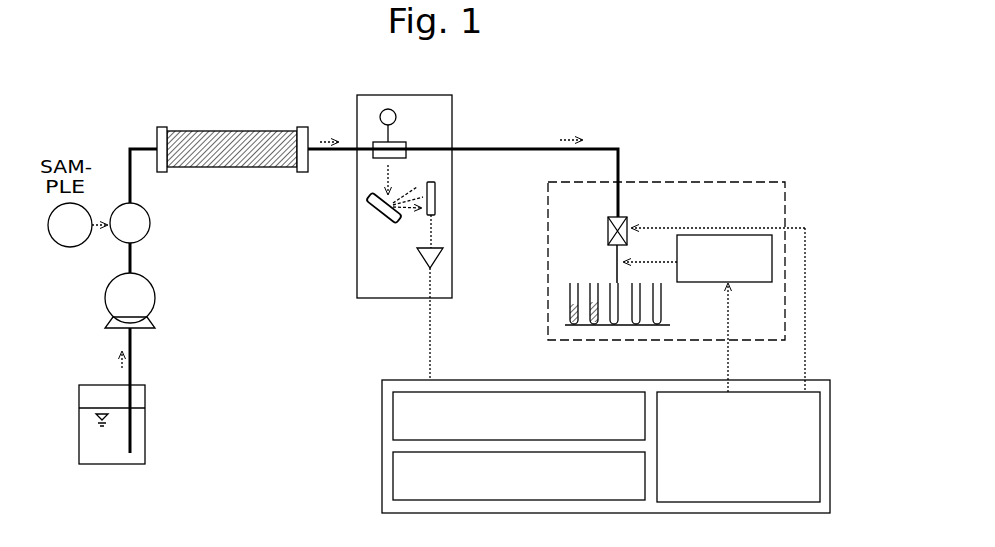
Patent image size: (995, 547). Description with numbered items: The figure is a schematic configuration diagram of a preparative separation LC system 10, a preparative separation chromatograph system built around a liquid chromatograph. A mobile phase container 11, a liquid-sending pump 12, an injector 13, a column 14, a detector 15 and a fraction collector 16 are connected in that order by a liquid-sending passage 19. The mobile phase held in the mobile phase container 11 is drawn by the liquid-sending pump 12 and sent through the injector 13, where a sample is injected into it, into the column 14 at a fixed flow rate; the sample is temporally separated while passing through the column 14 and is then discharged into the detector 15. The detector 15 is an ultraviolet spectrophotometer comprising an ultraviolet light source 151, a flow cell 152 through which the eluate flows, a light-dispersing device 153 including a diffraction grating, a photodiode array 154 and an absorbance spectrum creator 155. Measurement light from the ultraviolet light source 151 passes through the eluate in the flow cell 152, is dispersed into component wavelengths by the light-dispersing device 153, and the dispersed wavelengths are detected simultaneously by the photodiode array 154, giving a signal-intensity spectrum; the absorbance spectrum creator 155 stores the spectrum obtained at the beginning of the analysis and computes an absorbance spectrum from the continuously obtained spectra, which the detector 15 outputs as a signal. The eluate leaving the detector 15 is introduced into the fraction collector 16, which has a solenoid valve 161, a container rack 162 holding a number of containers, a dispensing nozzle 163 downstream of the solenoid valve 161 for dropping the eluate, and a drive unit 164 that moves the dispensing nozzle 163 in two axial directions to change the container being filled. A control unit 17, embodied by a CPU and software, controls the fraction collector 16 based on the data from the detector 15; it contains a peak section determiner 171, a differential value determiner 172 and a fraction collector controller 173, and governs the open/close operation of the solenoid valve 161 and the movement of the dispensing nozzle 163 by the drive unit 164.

The preparative separation LC system 10 is at (782, 111).
The mobile phase container 11 is at (147, 433).
The liquid-sending pump 12 is at (155, 302).
The injector 13 is at (147, 233).
The column 14 is at (235, 130).
The detector 15 is at (380, 94).
The ultraviolet light source 151 is at (378, 113).
The flow cell 152 is at (374, 142).
The light-dispersing device 153 is at (372, 213).
The photodiode array 154 is at (437, 210).
The absorbance spectrum creator 155 is at (438, 260).
The fraction collector 16 is at (730, 182).
The solenoid valve 161 is at (628, 222).
The container rack 162 is at (673, 320).
The dispensing nozzle 163 is at (614, 267).
The drive unit 164 is at (747, 285).
The control unit 17 is at (830, 380).
The peak section determiner 171 is at (519, 416).
The differential value determiner 172 is at (519, 476).
The fraction collector controller 173 is at (738, 447).
The liquid-sending passage 19 is at (500, 148).